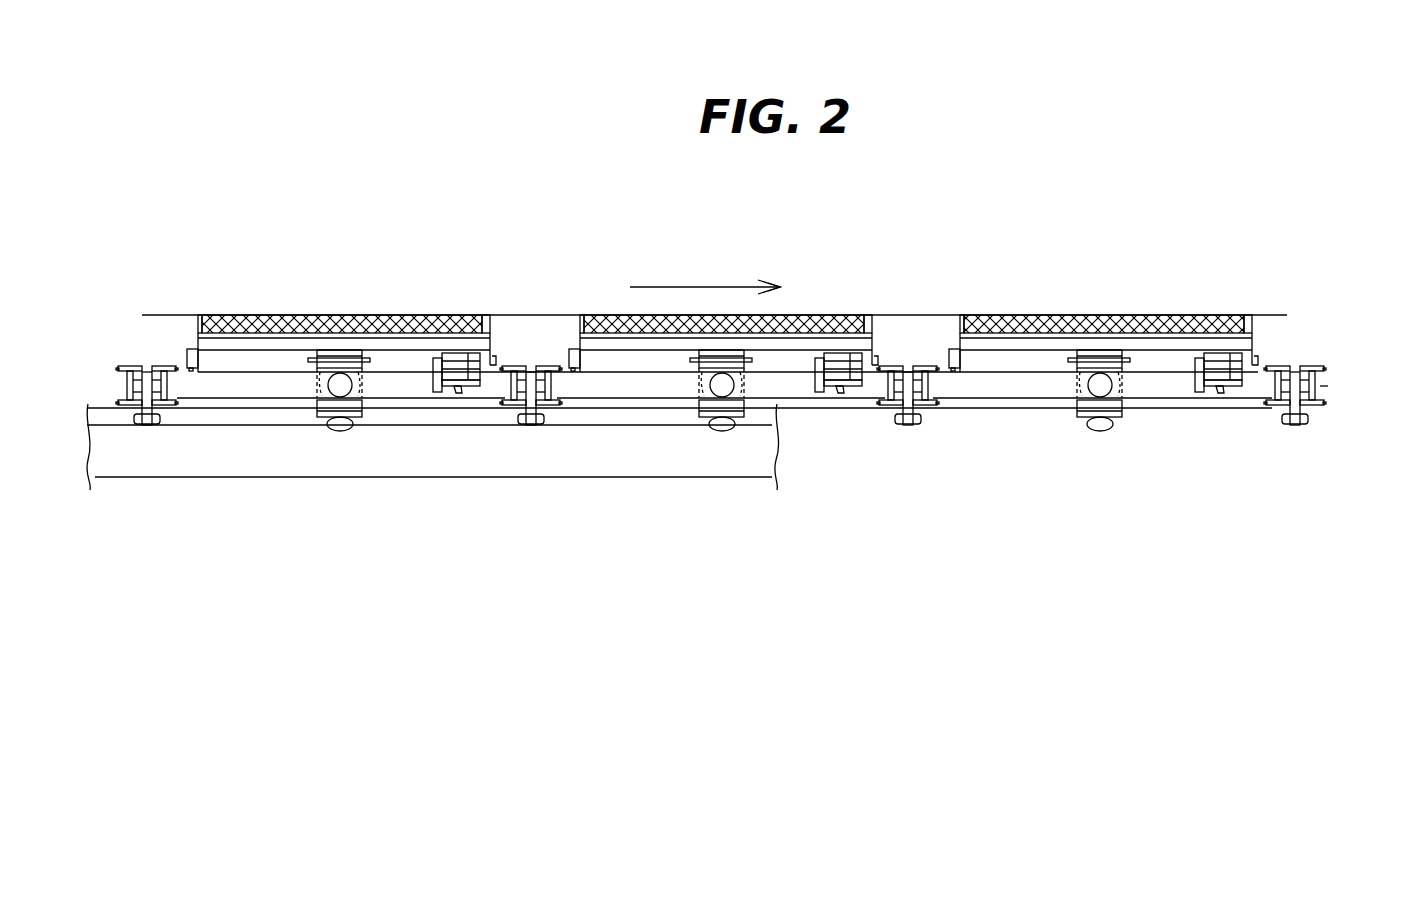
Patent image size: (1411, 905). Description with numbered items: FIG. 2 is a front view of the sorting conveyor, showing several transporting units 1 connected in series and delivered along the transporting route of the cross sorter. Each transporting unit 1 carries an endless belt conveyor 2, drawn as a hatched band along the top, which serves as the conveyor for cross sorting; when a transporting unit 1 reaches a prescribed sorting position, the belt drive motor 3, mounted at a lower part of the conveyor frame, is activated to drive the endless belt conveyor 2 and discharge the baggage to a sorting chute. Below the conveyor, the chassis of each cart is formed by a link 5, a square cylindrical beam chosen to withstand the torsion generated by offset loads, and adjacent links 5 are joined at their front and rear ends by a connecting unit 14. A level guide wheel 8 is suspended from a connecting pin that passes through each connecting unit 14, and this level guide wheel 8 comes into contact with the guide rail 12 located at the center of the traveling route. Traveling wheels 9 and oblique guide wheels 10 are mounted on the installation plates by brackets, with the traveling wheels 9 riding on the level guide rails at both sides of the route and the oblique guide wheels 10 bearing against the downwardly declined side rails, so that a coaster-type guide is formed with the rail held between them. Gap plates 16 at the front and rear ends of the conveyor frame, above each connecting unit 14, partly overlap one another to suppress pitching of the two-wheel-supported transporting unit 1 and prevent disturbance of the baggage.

The transporting unit 1 is at (322, 302).
The endless belt conveyor 2 is at (398, 315).
The belt drive motor 3 is at (449, 393).
The link 5 is at (237, 399).
The level guide wheel 8 is at (158, 422).
The traveling wheel 9 is at (353, 390).
The oblique guide wheel 10 is at (338, 431).
The guide rail (center rail) 12 is at (103, 412).
The connecting unit 14 is at (137, 360).
The gap plate 16 is at (164, 315).